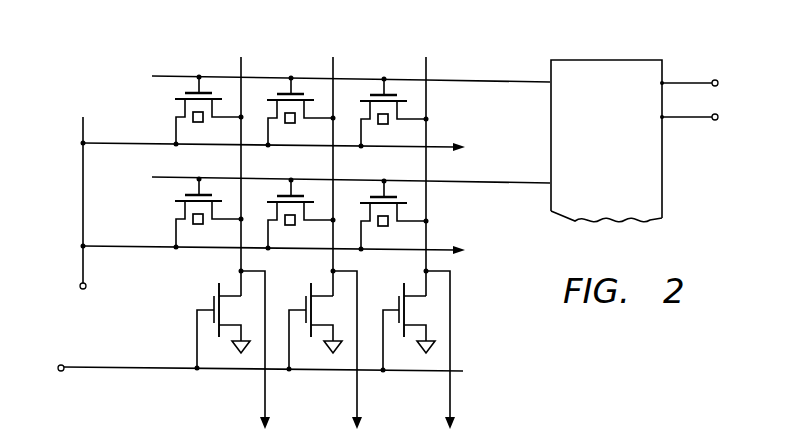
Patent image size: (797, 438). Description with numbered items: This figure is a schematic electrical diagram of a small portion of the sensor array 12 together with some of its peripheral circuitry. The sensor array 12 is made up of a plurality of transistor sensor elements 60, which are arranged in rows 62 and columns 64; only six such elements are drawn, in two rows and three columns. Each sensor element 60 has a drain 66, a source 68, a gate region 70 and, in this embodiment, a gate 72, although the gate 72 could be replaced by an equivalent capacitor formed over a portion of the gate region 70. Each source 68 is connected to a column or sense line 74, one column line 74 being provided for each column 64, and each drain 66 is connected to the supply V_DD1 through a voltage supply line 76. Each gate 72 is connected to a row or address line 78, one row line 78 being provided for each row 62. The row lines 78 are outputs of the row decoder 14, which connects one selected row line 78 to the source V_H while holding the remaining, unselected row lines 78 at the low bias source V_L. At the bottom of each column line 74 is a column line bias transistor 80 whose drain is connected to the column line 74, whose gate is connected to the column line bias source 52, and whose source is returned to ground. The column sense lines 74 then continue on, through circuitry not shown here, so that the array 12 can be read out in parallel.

The sensor array 12 is at (106, 59).
The row decoder 14 is at (596, 60).
The column line bias source 52 is at (73, 365).
The transistor sensor element 60 is at (211, 93).
The row 62 is at (71, 102).
The column 64 is at (200, 53).
The drain 66 is at (177, 104).
The source 68 is at (215, 111).
The gate region 70 is at (198, 122).
The gate 72 is at (188, 93).
The column line 74 is at (242, 58).
The voltage supply line 76 is at (83, 180).
The row line 78 is at (528, 82).
The column line bias transistor 80 is at (217, 348).